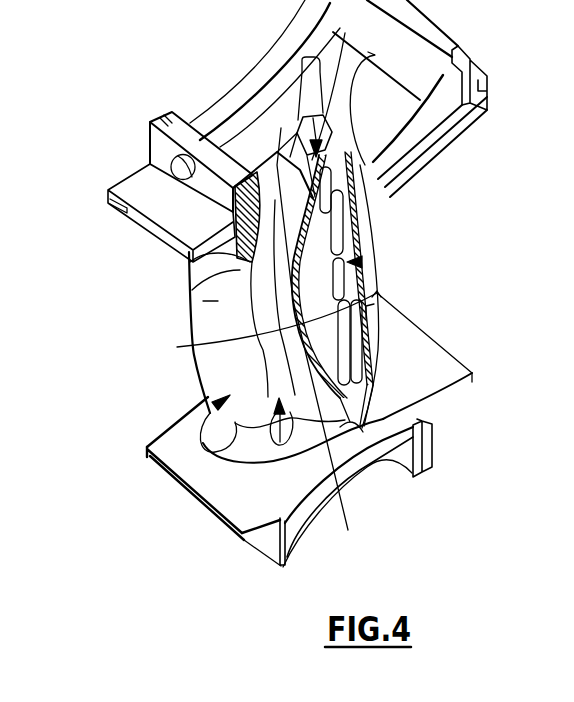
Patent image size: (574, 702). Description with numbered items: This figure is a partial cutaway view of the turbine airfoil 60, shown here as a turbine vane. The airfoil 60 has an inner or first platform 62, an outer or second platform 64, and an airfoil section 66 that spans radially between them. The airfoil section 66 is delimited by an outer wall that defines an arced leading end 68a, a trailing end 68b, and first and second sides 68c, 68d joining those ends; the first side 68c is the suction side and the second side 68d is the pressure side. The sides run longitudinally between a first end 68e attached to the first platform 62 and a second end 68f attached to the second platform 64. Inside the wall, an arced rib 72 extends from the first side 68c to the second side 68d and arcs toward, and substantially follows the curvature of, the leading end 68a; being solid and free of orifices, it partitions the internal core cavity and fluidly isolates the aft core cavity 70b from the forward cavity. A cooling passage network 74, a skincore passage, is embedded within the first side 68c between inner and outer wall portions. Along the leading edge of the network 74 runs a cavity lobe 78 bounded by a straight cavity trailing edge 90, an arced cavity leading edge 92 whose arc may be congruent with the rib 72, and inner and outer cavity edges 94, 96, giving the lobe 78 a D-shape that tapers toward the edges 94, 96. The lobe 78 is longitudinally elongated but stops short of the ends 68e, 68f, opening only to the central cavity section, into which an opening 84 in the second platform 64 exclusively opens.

The turbine airfoil 60 is at (115, 440).
The first platform 62 is at (444, 386).
The second platform 64 is at (447, 108).
The airfoil section 66 is at (148, 458).
The arced leading end 68a is at (191, 333).
The trailing end 68b is at (378, 250).
The first side 68c is at (205, 378).
The second side 68d is at (191, 297).
The first end 68e is at (362, 428).
The second end 68f is at (385, 190).
The aft core cavity 70b is at (345, 33).
The arced rib 72 is at (276, 150).
The cooling passage network 74 is at (362, 262).
The cavity lobe 78 is at (348, 530).
The opening 84 is at (313, 118).
The cavity trailing edge 90 is at (378, 294).
The cavity leading edge 92 is at (262, 327).
The inner cavity edge 94 is at (366, 318).
The outer cavity edge 96 is at (332, 220).